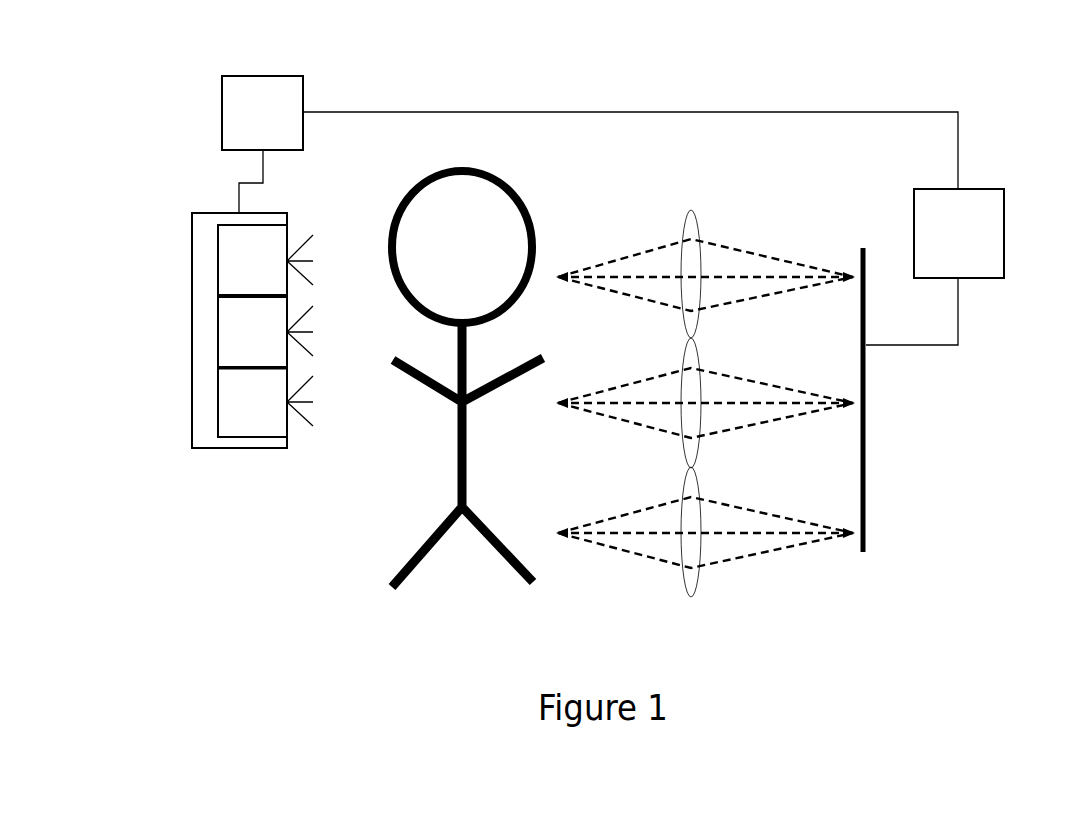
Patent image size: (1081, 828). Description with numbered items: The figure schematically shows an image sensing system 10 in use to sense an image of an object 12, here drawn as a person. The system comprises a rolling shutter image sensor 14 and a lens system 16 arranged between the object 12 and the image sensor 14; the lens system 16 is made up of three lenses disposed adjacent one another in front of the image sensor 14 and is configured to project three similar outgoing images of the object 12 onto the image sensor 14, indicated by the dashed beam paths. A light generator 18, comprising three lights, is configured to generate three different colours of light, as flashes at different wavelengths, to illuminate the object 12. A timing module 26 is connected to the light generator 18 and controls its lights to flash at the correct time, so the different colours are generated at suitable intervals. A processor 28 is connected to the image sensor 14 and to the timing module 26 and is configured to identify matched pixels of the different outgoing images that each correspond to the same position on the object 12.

The image sensing system 10 is at (353, 34).
The object 12 is at (513, 188).
The rolling shutter image sensor 14 is at (866, 440).
The lens system 16 is at (732, 380).
The light generator 18 is at (230, 373).
The timing module 26 is at (222, 92).
The processor 28 is at (1004, 233).